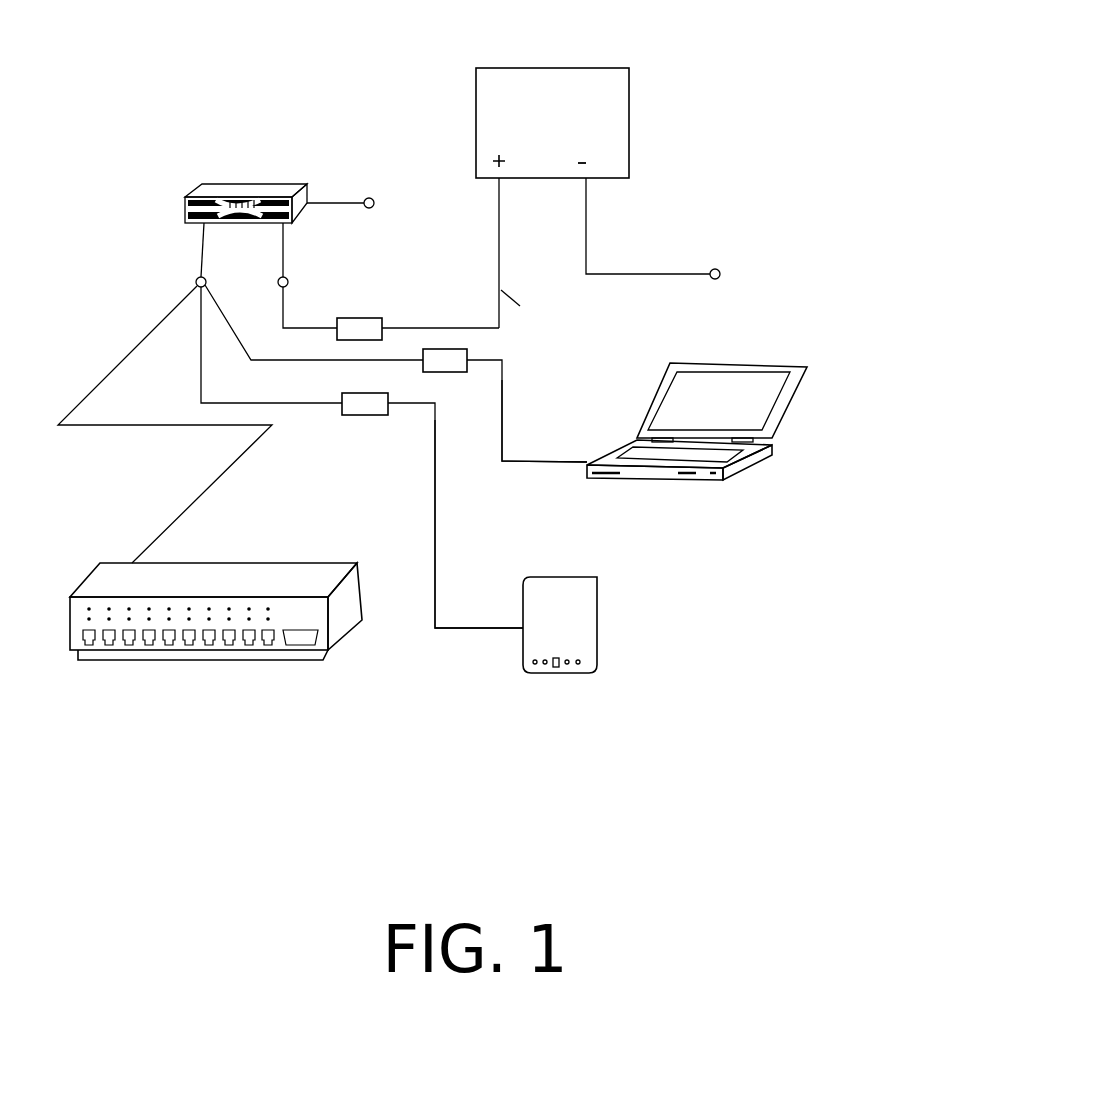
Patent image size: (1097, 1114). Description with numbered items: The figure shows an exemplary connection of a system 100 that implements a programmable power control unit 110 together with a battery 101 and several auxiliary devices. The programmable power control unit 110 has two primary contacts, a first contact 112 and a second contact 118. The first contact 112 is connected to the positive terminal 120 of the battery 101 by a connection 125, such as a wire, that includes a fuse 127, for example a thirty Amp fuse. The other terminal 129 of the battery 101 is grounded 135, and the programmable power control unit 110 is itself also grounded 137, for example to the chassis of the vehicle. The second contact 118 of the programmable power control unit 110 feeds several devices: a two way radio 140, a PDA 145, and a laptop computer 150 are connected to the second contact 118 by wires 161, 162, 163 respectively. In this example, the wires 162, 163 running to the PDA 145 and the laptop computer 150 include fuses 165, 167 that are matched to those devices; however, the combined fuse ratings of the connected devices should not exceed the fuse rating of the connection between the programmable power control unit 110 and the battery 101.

The system 100 is at (878, 111).
The battery 101 is at (629, 103).
The programmable power control unit 110 is at (247, 190).
The first contact 112 is at (289, 282).
The second contact 118 is at (196, 277).
The positive terminal 120 is at (498, 177).
The connection 125 is at (862, 604).
The fuse 127 is at (368, 315).
The other terminal 129 is at (586, 178).
The ground 135 is at (727, 264).
The ground 137 is at (369, 197).
The two way radio 140 is at (218, 658).
The PDA 145 is at (592, 628).
The laptop computer 150 is at (783, 412).
The wire 161 is at (210, 490).
The wire 162 is at (436, 510).
The wire 163 is at (502, 420).
The fuse 165 is at (370, 415).
The fuse 167 is at (445, 372).